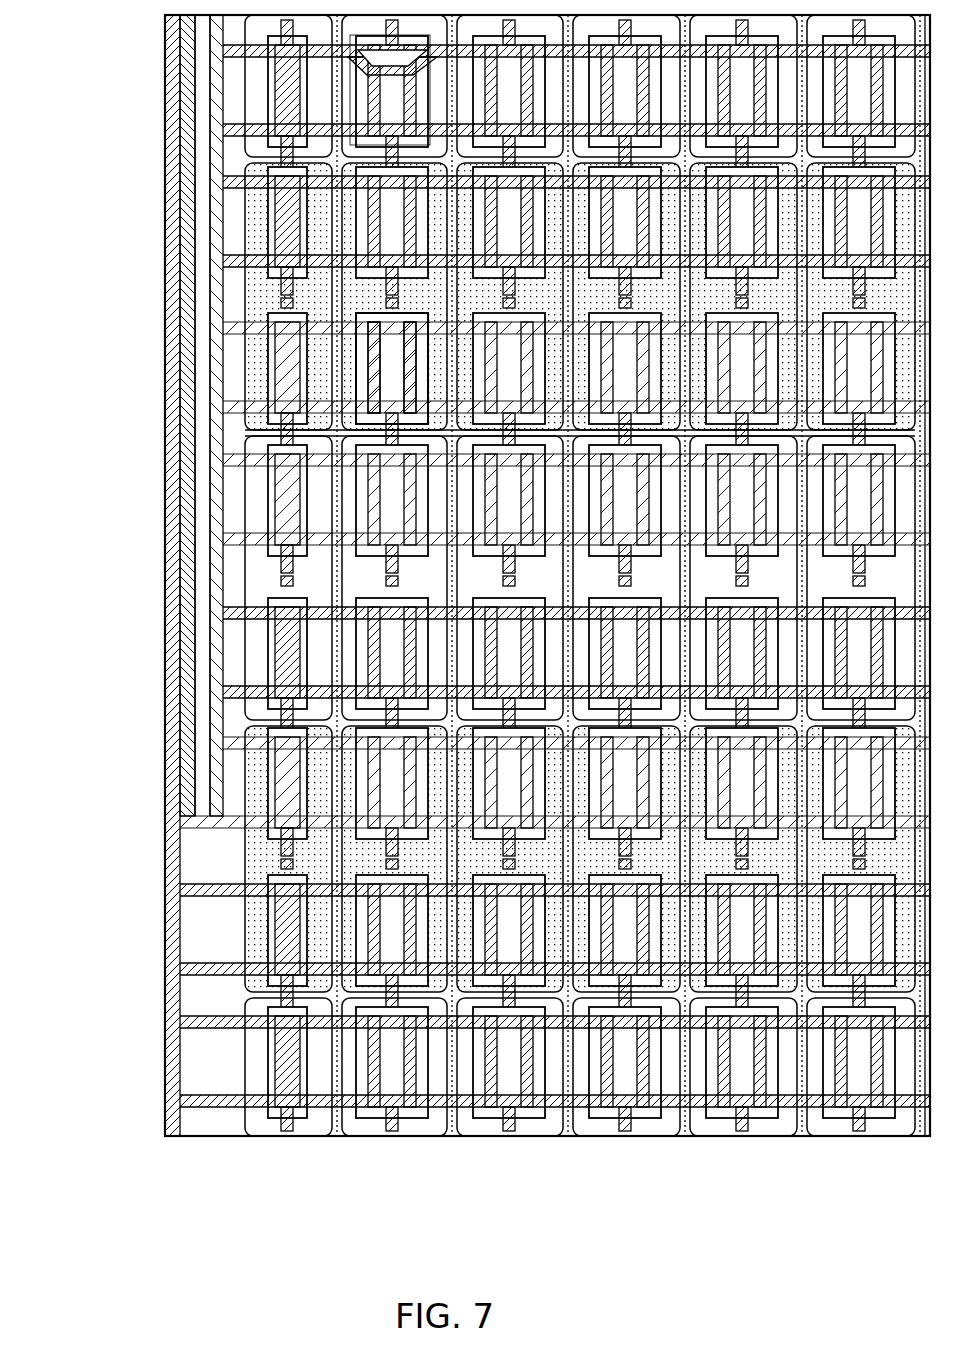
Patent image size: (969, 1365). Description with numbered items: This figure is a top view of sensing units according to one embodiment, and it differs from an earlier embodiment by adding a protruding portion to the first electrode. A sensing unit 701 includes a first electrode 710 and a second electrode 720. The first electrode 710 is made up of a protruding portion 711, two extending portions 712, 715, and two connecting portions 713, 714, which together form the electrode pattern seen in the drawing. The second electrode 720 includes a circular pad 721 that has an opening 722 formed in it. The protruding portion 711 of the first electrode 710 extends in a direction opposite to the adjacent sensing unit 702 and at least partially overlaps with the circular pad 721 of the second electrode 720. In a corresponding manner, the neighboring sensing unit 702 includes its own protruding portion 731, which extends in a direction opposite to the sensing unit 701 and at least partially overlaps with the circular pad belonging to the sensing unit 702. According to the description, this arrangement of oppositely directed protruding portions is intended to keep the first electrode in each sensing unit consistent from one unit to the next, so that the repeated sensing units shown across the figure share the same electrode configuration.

The sensing unit 701 is at (350, 303).
The sensing unit 702 is at (346, 561).
The first electrode 710 is at (85, 292).
The protruding portion 711 is at (395, 324).
The extending portion 712 is at (366, 338).
The connecting portion 713 is at (410, 392).
The connecting portion 714 is at (365, 406).
The extending portion 715 is at (375, 425).
The second electrode 720 is at (85, 520).
The circular pad 721 is at (378, 430).
The opening 722 is at (368, 437).
The protruding portion 731 is at (345, 432).